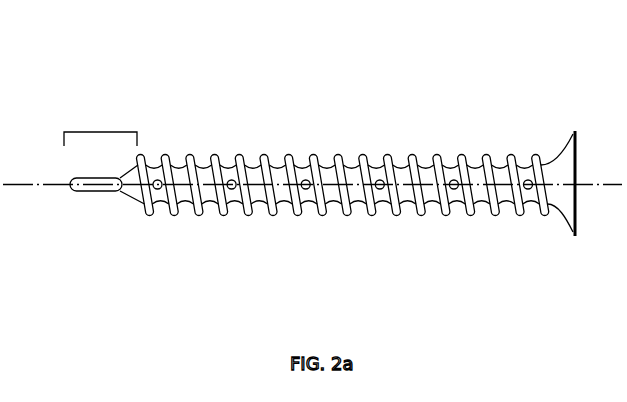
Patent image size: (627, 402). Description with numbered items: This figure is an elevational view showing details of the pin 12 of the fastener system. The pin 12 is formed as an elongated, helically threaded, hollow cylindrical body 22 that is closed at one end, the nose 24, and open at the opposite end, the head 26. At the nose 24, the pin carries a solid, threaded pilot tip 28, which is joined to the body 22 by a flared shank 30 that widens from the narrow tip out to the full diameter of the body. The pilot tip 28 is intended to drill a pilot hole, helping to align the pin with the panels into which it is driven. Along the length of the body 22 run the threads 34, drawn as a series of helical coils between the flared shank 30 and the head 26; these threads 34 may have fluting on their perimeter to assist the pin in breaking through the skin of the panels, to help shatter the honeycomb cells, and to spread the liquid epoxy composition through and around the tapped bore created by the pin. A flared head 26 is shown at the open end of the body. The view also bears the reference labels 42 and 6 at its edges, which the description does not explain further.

The pin 12 is at (312, 193).
The body 22 is at (386, 158).
The nose 24 is at (100, 132).
The head 26 is at (572, 222).
The pilot tip 28 is at (100, 193).
The flared shank 30 is at (138, 206).
The threads 34 is at (238, 157).
The adjacent component 42 is at (605, 401).
The partial reference 6 is at (5, 283).